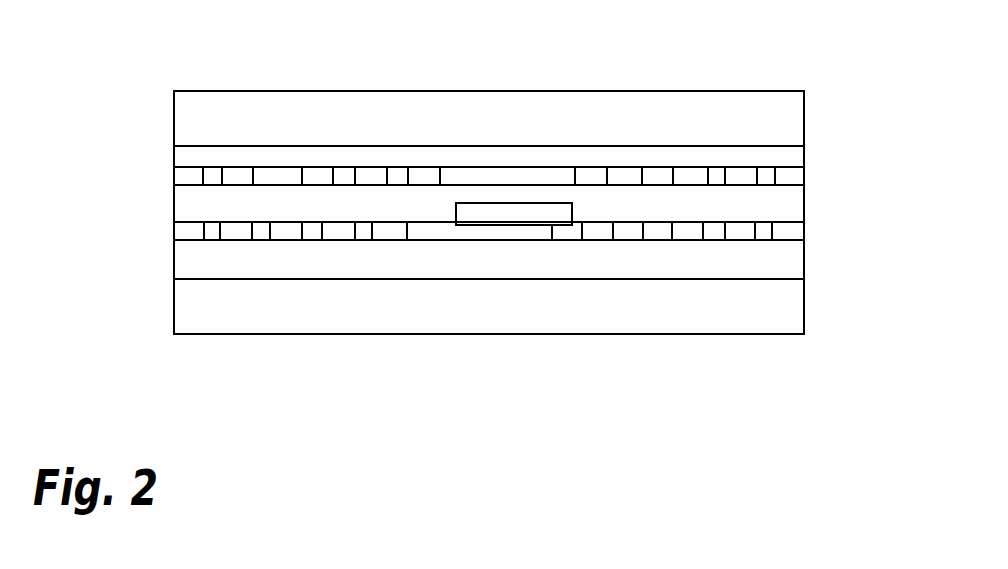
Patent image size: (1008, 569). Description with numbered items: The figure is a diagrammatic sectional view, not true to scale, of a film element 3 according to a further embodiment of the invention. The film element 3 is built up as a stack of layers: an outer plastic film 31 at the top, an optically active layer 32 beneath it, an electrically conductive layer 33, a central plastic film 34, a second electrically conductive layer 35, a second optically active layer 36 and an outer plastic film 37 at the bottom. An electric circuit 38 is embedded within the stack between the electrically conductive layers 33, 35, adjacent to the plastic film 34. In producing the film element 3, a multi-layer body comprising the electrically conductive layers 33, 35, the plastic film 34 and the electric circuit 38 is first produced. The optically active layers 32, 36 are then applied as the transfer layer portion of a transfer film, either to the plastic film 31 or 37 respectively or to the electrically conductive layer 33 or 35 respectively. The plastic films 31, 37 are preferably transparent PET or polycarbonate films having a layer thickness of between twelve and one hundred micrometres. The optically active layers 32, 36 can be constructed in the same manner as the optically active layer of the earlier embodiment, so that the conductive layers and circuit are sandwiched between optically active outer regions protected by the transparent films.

The film element 3 is at (657, 52).
The plastic film 31 is at (800, 123).
The optically active layer 32 is at (800, 159).
The electrically conductive layer 33 is at (800, 177).
The plastic film 34 is at (192, 203).
The electrically conductive layer 35 is at (800, 231).
The optically active layer 36 is at (192, 264).
The plastic film 37 is at (387, 313).
The electric circuit 38 is at (504, 203).